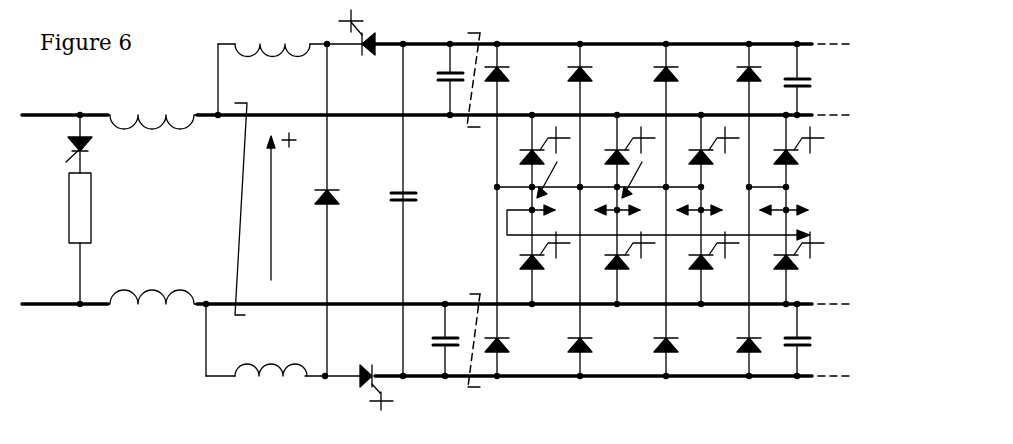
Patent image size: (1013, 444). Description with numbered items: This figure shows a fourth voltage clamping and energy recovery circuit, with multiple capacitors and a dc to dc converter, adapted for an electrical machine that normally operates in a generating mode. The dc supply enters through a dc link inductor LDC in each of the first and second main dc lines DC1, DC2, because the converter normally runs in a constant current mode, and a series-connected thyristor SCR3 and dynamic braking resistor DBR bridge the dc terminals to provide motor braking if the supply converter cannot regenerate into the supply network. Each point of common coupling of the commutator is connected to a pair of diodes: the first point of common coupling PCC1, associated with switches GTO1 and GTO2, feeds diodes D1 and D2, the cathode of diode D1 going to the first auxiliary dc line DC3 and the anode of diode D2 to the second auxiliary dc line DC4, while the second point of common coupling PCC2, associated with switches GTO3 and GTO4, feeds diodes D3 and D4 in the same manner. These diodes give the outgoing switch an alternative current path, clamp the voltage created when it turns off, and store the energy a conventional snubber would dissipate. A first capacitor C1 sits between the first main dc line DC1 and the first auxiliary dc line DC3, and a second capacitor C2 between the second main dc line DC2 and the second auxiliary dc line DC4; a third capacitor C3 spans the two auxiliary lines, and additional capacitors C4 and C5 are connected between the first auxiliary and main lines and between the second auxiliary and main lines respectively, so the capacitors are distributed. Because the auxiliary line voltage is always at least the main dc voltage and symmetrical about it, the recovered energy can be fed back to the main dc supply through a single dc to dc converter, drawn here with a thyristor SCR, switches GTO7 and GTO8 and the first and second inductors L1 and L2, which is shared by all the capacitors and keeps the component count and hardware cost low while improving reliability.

The first main dc line DC1 is at (437, 103).
The second main dc line DC2 is at (437, 319).
The first auxiliary dc line DC3 is at (613, 33).
The second auxiliary dc line DC4 is at (613, 390).
The dc link inductor LDC is at (152, 212).
The first inductor L1 is at (271, 382).
The second inductor L2 is at (272, 39).
The thyristor SCR3 is at (111, 152).
The dynamic braking resistor DBR is at (54, 208).
The gate turn-off thyristor GTO7 is at (384, 32).
The gate turn-off thyristor GTO8 is at (361, 376).
The thyristor SCR is at (347, 186).
The first capacitor C1 is at (436, 57).
The second capacitor C2 is at (461, 324).
The third capacitor C3 is at (417, 210).
The additional capacitor C4 is at (816, 79).
The additional capacitor C5 is at (815, 340).
The diode D1 is at (506, 89).
The diode D2 is at (506, 357).
The diode D3 is at (589, 89).
The diode D4 is at (589, 357).
The switch GTO1 is at (532, 152).
The switch GTO2 is at (532, 267).
The switch GTO3 is at (617, 152).
The switch GTO4 is at (617, 267).
The first point of common coupling PCC1 is at (562, 177).
The second point of common coupling PCC2 is at (647, 177).